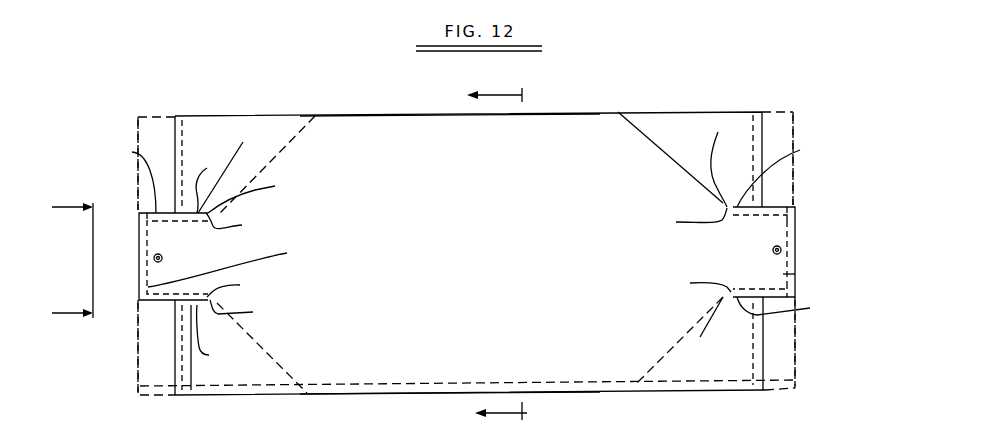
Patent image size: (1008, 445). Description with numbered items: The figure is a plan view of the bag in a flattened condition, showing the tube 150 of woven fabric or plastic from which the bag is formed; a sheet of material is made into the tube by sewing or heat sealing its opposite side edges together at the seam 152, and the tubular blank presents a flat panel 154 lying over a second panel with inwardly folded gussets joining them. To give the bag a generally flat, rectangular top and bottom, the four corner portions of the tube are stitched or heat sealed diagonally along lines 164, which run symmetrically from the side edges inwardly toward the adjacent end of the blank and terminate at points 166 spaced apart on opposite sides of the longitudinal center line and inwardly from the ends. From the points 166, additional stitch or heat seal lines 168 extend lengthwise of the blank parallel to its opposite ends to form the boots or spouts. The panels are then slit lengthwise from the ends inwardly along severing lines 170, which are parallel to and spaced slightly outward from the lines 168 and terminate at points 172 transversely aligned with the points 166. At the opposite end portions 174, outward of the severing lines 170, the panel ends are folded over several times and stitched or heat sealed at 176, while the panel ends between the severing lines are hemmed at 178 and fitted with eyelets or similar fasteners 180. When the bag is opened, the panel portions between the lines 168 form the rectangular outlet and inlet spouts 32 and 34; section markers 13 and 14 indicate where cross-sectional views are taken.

The section line 13- 13 is at (497, 253).
The section line 14- 14 is at (72, 262).
The outlet spout 32 is at (808, 215).
The inlet spout 34 is at (132, 243).
The tube 150 is at (803, 114).
The seam 152 is at (233, 389).
The flat panel 154 is at (393, 121).
The diagonal stitch or heat seal lines 164 is at (272, 161).
The termination points 166 is at (468, 252).
The spout stitch or heat seal lines 168 is at (189, 418).
The severing lines 170 is at (463, 252).
The termination points of severing lines 172 is at (467, 243).
The end portions 174 is at (150, 116).
The folded and stitched or heat sealed end portions 176 is at (201, 119).
The hem 178 is at (811, 274).
The eyelets, cringles or similar fasteners 180 is at (163, 256).